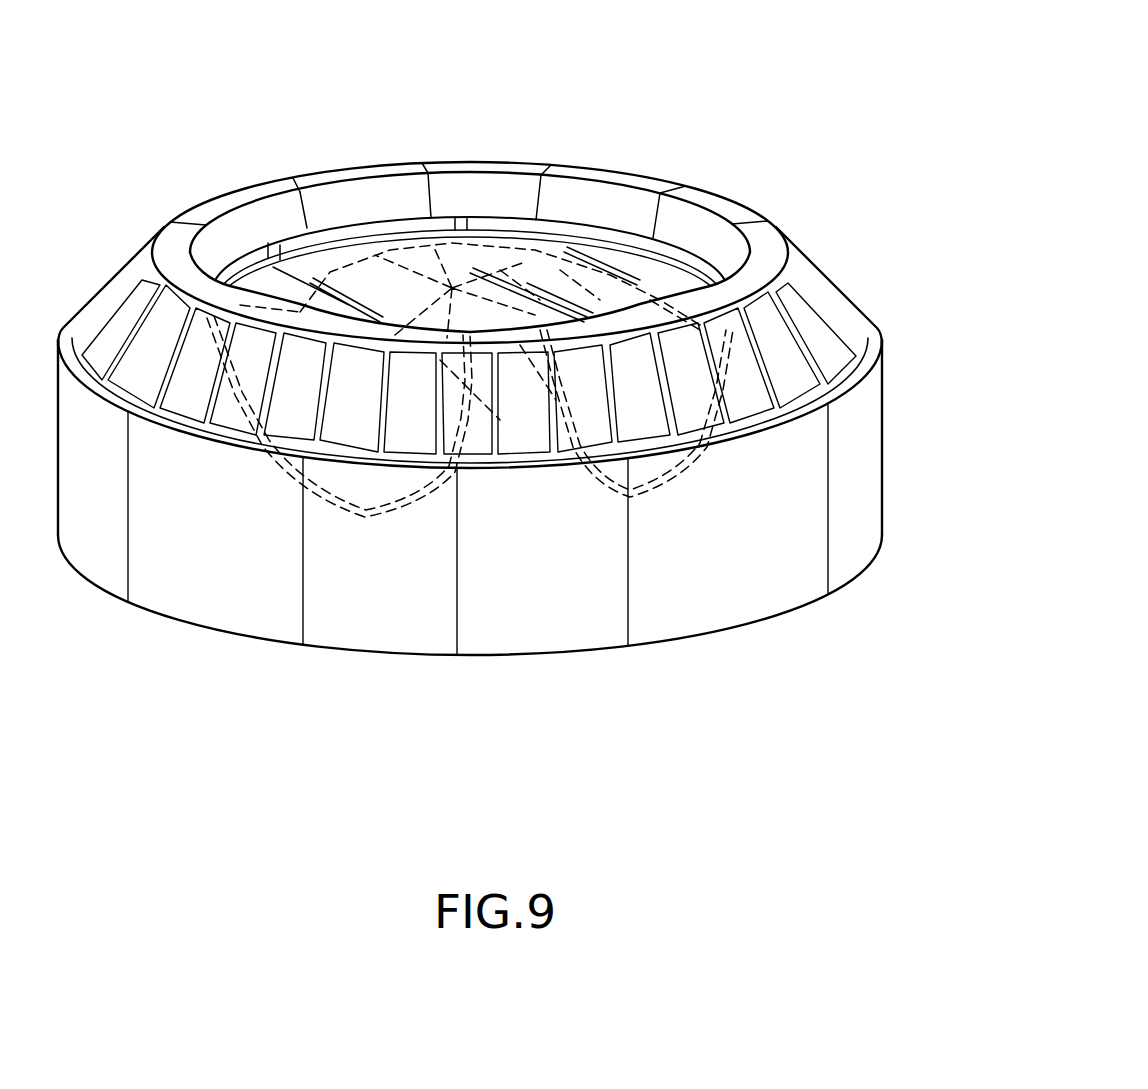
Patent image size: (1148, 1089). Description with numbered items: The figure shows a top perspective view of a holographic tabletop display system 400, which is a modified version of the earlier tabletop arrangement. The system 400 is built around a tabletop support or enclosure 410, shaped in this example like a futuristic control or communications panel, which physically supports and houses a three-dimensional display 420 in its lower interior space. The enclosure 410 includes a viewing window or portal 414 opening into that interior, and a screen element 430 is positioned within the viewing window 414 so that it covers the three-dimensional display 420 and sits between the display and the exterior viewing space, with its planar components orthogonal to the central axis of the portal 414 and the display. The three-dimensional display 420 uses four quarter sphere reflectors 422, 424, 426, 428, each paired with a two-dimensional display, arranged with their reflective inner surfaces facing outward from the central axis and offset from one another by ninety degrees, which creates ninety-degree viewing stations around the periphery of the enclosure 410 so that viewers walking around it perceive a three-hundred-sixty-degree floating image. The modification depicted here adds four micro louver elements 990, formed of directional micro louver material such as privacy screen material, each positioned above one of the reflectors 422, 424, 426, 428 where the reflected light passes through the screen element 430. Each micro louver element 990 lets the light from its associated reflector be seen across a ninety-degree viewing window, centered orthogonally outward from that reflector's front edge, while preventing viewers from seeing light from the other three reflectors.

The holographic tabletop display system 400 is at (692, 66).
The tabletop support or enclosure 410 is at (885, 398).
The viewing window or portal 414 is at (652, 200).
The 3D display 420 is at (248, 472).
The quarter sphere reflector 422 is at (378, 528).
The quarter sphere reflector 424 is at (612, 528).
The quarter sphere reflector 426 is at (501, 261).
The quarter sphere reflector 428 is at (350, 288).
The screen element 430 is at (216, 285).
The micro louver element 990 is at (560, 264).